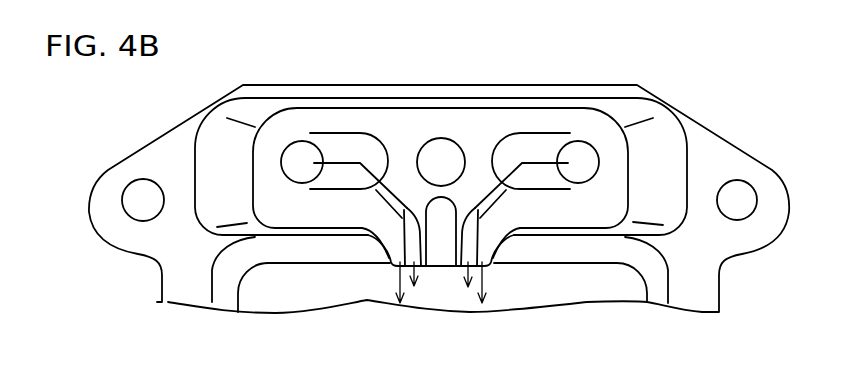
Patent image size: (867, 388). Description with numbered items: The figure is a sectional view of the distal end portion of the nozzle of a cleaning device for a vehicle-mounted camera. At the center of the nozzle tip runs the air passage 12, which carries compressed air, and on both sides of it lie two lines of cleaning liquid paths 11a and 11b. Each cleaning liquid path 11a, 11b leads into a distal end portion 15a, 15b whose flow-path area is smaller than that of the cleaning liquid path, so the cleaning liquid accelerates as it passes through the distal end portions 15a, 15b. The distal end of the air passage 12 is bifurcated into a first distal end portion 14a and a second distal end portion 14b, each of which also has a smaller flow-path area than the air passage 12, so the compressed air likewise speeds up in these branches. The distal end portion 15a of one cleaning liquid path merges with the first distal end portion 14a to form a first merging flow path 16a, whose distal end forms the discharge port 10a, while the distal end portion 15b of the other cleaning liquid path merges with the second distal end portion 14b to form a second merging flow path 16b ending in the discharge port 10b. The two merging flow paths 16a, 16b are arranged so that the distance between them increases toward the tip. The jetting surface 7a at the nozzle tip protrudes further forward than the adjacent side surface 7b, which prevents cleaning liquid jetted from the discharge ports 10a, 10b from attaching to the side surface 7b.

The jetting surface 7a is at (441, 262).
The side surface 7b is at (218, 238).
The discharge port 10a is at (404, 281).
The discharge port 10b is at (480, 282).
The cleaning liquid path 11a is at (302, 147).
The cleaning liquid path 11b is at (583, 147).
The air passage 12 is at (443, 142).
The first distal end portion 14a is at (405, 208).
The second distal end portion 14b is at (477, 208).
The distal end portion 15a is at (393, 218).
The distal end portion 15b is at (489, 218).
The first merging flow path 16a is at (428, 256).
The second merging flow path 16b is at (452, 256).